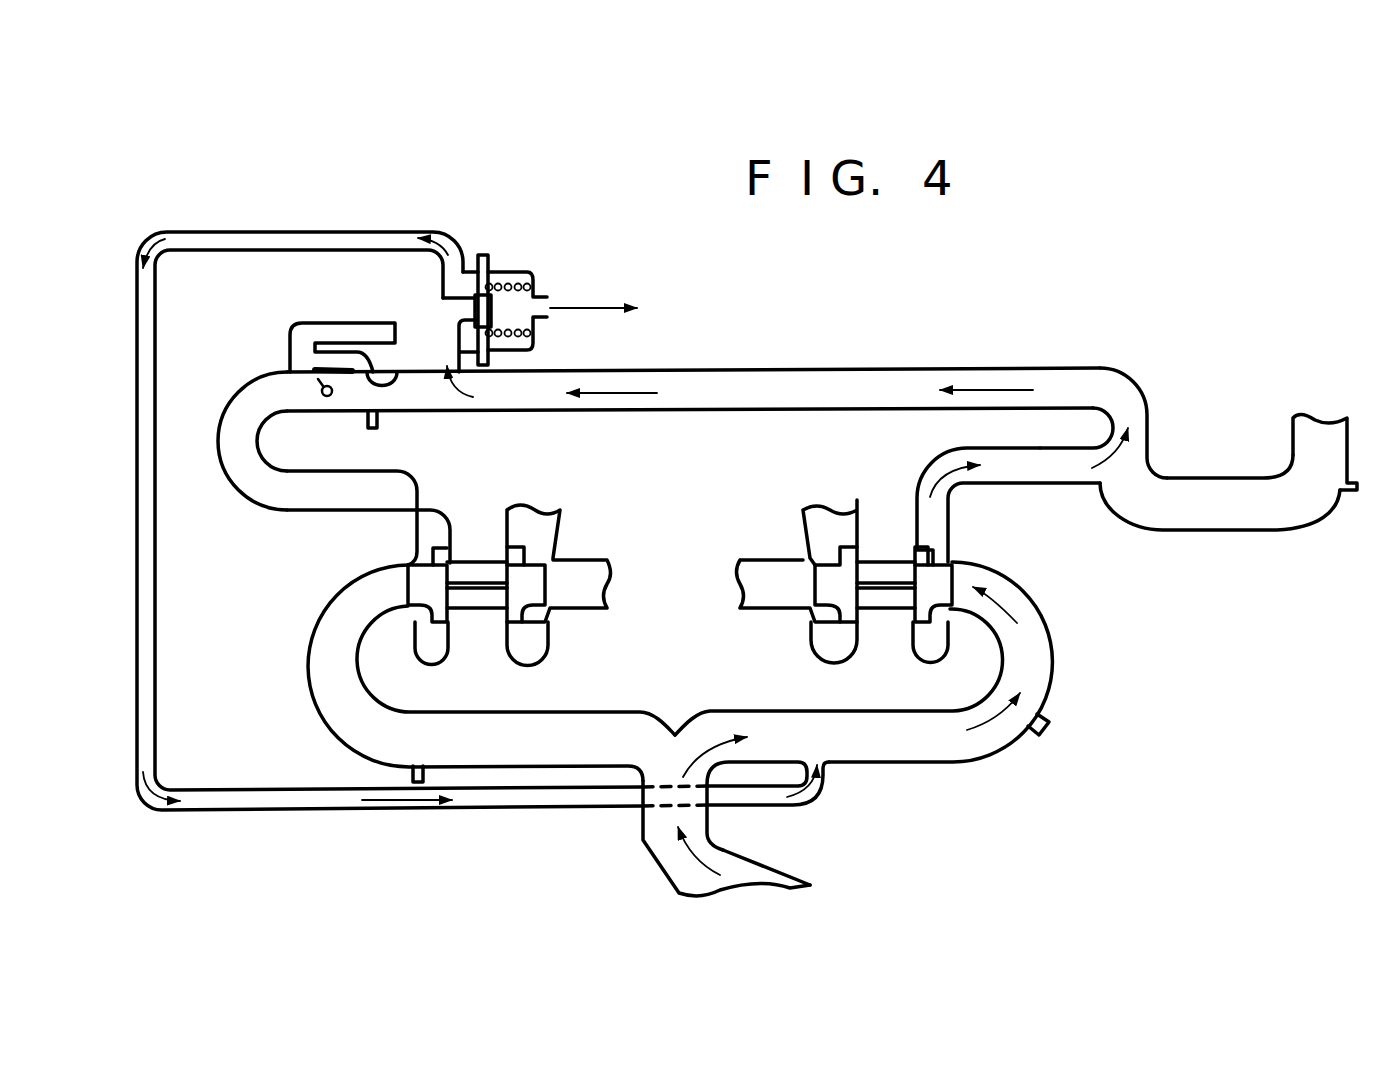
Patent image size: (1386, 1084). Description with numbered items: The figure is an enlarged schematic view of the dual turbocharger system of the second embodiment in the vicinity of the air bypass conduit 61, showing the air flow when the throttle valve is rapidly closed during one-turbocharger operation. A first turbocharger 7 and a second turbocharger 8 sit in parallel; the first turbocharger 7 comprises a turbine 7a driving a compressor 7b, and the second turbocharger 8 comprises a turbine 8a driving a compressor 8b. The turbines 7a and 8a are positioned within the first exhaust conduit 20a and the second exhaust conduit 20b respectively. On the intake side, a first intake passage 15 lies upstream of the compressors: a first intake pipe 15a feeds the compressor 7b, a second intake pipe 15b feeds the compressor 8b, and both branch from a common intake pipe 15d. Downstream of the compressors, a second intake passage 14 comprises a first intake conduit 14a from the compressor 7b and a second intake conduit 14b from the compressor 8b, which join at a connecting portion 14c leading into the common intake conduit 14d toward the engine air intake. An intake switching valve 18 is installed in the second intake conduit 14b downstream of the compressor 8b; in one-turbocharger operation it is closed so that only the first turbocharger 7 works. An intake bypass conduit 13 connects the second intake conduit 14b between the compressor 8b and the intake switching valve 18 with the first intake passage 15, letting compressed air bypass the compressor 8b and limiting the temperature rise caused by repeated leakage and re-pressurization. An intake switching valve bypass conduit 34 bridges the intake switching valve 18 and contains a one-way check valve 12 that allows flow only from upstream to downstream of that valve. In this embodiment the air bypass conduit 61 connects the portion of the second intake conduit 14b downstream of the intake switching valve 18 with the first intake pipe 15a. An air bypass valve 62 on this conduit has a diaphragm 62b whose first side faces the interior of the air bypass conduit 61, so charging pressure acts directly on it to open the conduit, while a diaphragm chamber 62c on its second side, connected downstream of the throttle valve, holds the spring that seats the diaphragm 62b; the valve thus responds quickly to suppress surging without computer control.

The air bypass conduit 61 is at (220, 810).
The air bypass valve 62 is at (543, 300).
The diaphragm 62b is at (530, 343).
The diaphragm chamber 62c is at (518, 275).
The intake bypass conduit 13 is at (348, 332).
The one-way check valve 12 is at (397, 372).
The intake switching valve bypass conduit 34 is at (330, 362).
The intake switching valve 18 is at (323, 400).
The second intake passage 14 is at (1263, 477).
The first intake conduit 14a is at (1040, 472).
The second intake conduit 14b is at (777, 371).
The connecting portion 14c is at (1133, 453).
The common intake conduit 14d is at (1217, 518).
The first turbocharger 7 is at (877, 621).
The turbine 7a is at (838, 600).
The compressor 7b is at (928, 600).
The second turbocharger 8 is at (495, 626).
The turbine 8a is at (523, 600).
The compressor 8b is at (423, 607).
The first exhaust conduit 20a is at (779, 567).
The second exhaust conduit 20b is at (583, 568).
The first intake passage 15 is at (643, 833).
The first intake pipe 15a is at (1050, 643).
The second intake pipe 15b is at (309, 657).
The common intake pipe 15d is at (720, 853).